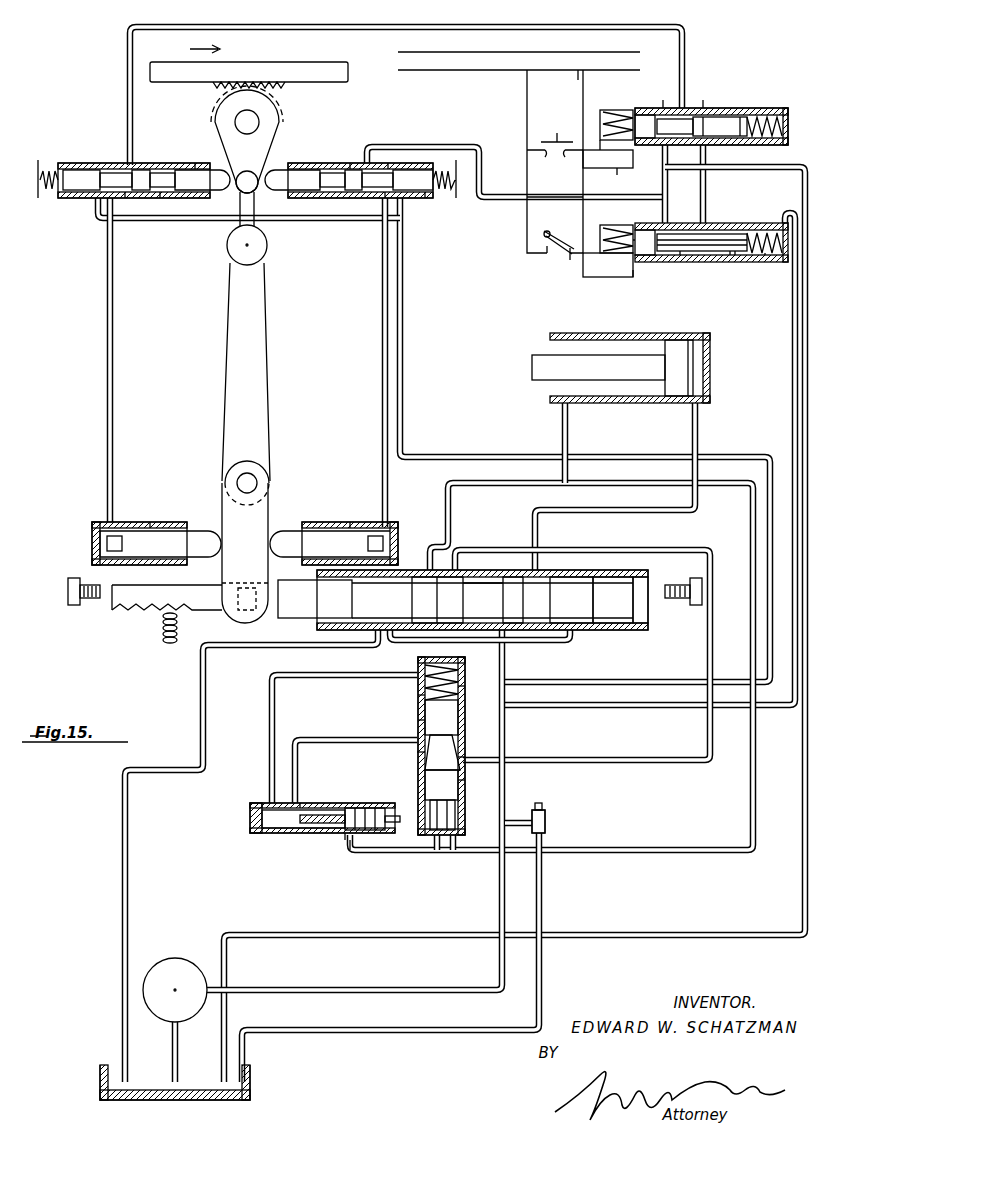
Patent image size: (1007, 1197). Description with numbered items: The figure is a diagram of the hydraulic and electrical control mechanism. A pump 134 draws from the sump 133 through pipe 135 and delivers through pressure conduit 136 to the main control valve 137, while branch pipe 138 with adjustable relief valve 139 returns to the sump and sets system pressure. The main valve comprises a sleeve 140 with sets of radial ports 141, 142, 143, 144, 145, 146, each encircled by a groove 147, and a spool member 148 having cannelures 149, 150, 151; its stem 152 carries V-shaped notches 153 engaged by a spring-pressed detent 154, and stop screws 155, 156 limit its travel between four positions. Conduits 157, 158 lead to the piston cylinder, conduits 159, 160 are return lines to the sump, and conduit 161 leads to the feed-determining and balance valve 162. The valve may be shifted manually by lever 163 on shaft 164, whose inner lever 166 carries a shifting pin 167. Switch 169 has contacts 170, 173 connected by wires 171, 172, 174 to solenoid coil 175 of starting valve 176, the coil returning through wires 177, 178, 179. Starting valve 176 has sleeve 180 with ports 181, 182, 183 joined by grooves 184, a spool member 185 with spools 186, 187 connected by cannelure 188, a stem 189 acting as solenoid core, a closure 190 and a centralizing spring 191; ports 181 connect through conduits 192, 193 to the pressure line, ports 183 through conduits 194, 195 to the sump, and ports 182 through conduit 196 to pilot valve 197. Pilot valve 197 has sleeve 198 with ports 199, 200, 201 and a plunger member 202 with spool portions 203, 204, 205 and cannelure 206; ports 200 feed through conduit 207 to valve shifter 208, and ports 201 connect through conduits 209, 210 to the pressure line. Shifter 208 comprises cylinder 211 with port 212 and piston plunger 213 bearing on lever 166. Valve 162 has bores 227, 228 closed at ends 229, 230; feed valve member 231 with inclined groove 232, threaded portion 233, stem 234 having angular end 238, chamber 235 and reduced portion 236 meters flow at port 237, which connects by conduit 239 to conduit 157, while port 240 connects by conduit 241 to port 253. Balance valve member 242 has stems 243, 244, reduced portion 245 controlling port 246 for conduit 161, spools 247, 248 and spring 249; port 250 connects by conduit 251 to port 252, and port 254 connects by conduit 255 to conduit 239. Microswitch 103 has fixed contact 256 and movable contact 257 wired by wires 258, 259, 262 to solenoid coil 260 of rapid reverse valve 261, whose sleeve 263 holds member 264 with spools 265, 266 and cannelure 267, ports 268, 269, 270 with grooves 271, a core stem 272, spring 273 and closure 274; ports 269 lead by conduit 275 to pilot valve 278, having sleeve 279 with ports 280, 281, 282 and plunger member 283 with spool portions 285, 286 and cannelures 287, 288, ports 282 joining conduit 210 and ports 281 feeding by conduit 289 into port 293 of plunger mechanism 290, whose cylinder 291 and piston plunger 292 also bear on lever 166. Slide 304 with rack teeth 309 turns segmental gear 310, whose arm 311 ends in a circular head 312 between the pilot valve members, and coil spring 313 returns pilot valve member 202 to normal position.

The valve assembly 103 is at (506, 263).
The reservoir tank 133 is at (100, 1080).
The pump 134 is at (178, 966).
The pump suction line 135 is at (172, 1045).
The pump pressure line 136 is at (393, 987).
The control valve 137 is at (674, 658).
The relief valve 138 is at (539, 806).
The relief valve body 139 is at (548, 818).
The valve housing 140 is at (638, 570).
The spool rod 141 is at (398, 608).
The spool land 142 is at (437, 600).
The spool land groove 143 is at (452, 615).
The pressure chamber 144 is at (502, 620).
The spool land 145 is at (515, 578).
The spool land 146 is at (583, 612).
The housing top wall 147 is at (594, 571).
The end cap 148 is at (648, 595).
The spool end 149 is at (352, 606).
The inlet port 150 is at (520, 566).
The spool end land 151 is at (616, 598).
The link bar 152 is at (114, 604).
The spring link 153 is at (140, 613).
The coil spring 154 is at (165, 636).
The adjusting screw 155 is at (68, 590).
The adjusting screw 156 is at (702, 590).
The hydraulic line 157 is at (453, 500).
The hydraulic cylinder 158 is at (698, 430).
The drain line 159 is at (390, 642).
The drain line 160 is at (545, 645).
The hydraulic line 161 is at (635, 760).
The pilot valve 162 is at (311, 881).
The connecting rod 163 is at (268, 382).
The pivot pin 164 is at (252, 486).
The slide block 166 is at (266, 520).
The slide pin 167 is at (250, 586).
The check valve 169 is at (561, 123).
The valve seat 170 is at (538, 155).
The valve body 171 is at (527, 111).
The supply channel 172 is at (456, 70).
The valve seat 173 is at (564, 158).
The passage 174 is at (608, 160).
The solenoid lead 175 is at (622, 110).
The solenoid valve 176 is at (777, 65).
The passage 177 is at (633, 170).
The connection 178 is at (577, 76).
The supply channel 179 is at (558, 52).
The valve housing 180 is at (785, 107).
The spool piston 181 is at (710, 127).
The spool piston 182 is at (673, 125).
The inlet port 183 is at (664, 107).
The spool groove 184 is at (720, 116).
The spool groove 185 is at (760, 115).
The spool end cap 186 is at (645, 115).
The housing bottom wall 187 is at (748, 146).
The port 188 is at (703, 107).
The solenoid coil 189 is at (605, 110).
The return spring 190 is at (788, 120).
The end wall 191 is at (786, 146).
The connecting line 192 is at (705, 192).
The return line 193 is at (803, 355).
The connecting line 194 is at (656, 196).
The return line 195 is at (803, 862).
The pressure line 196 is at (425, 27).
The valve 197 is at (90, 117).
The spool end 198 is at (211, 166).
The spool land 199 is at (141, 163).
The port 200 is at (126, 199).
The port 201 is at (92, 199).
The crank pin 202 is at (222, 196).
The housing top wall 203 is at (80, 163).
The port 204 is at (160, 199).
The port 205 is at (195, 163).
The spool end 206 is at (100, 181).
The line 207 is at (172, 182).
The cylinder 208 is at (174, 490).
The line 209 is at (190, 222).
The line 210 is at (404, 328).
The cylinder port 211 is at (151, 522).
The cylinder housing 212 is at (92, 521).
The piston 213 is at (197, 534).
The port 227 is at (370, 832).
The valve housing 228 is at (463, 735).
The valve housing 229 is at (249, 824).
The spring 230 is at (462, 665).
The spool 231 is at (290, 831).
The spool thread 232 is at (316, 829).
The piston 233 is at (366, 809).
The piston grooves 234 is at (380, 817).
The pin 235 is at (390, 815).
The port 236 is at (345, 835).
The line 237 is at (356, 852).
The line 238 is at (430, 855).
The line 239 is at (615, 853).
The port 240 is at (301, 804).
The line 241 is at (342, 740).
The port 242 is at (464, 687).
The valve stem 243 is at (458, 805).
The port 244 is at (418, 696).
The valve piston 245 is at (442, 767).
The port 246 is at (465, 758).
The chamber 247 is at (462, 781).
The port 248 is at (420, 721).
The piston head 249 is at (440, 706).
The line 250 is at (400, 676).
The line 251 is at (298, 680).
The port 252 is at (261, 803).
The port 253 is at (418, 752).
The line 254 is at (455, 846).
The line 255 is at (438, 856).
The valve flap 256 is at (548, 255).
The flap valve 257 is at (548, 231).
The passage 258 is at (527, 275).
The passage 259 is at (570, 258).
The passage 260 is at (608, 267).
The spool groove 261 is at (742, 292).
The passage 262 is at (632, 275).
The spool groove 263 is at (766, 263).
The spool groove 264 is at (735, 263).
The spool end cap 265 is at (645, 263).
The return spring 266 is at (765, 232).
The spool piston 267 is at (695, 241).
The housing top wall 268 is at (722, 223).
The port 269 is at (680, 263).
The solenoid plunger 270 is at (625, 226).
The housing bottom wall 271 is at (692, 262).
The solenoid coil 272 is at (611, 233).
The end wall 273 is at (784, 264).
The line 274 is at (795, 205).
The line 275 is at (482, 200).
The valve 278 is at (385, 125).
The housing top wall 279 is at (290, 163).
The port 280 is at (378, 165).
The port 281 is at (384, 199).
The port 282 is at (418, 200).
The housing bottom wall 283 is at (300, 198).
The port 285 is at (351, 163).
The spring 286 is at (440, 170).
The spool end 287 is at (318, 181).
The spool end 288 is at (392, 182).
The line 289 is at (328, 163).
The cylinder 290 is at (367, 486).
The piston 291 is at (321, 528).
The cylinder port 292 is at (351, 522).
The cylinder housing 293 is at (398, 521).
The rack 304 is at (330, 62).
The rack teeth 309 is at (284, 87).
The gear 310 is at (281, 101).
The crank arm 311 is at (259, 163).
The crank pin 312 is at (256, 190).
The spring 313 is at (46, 196).